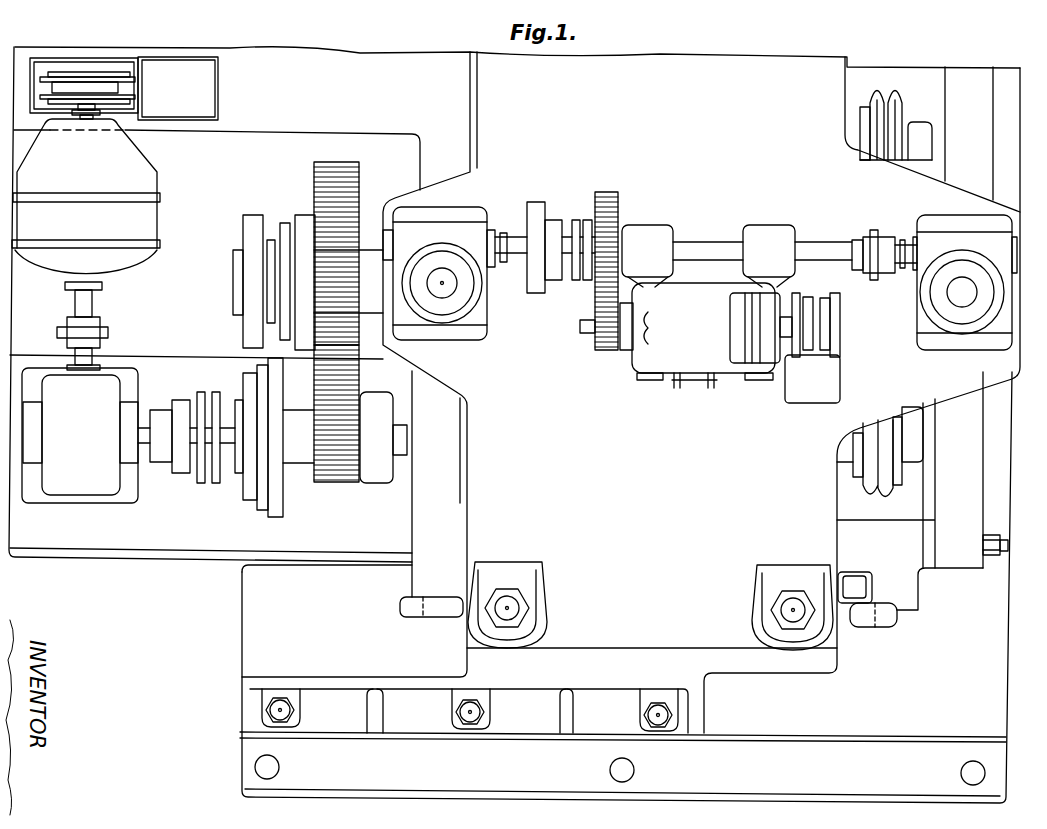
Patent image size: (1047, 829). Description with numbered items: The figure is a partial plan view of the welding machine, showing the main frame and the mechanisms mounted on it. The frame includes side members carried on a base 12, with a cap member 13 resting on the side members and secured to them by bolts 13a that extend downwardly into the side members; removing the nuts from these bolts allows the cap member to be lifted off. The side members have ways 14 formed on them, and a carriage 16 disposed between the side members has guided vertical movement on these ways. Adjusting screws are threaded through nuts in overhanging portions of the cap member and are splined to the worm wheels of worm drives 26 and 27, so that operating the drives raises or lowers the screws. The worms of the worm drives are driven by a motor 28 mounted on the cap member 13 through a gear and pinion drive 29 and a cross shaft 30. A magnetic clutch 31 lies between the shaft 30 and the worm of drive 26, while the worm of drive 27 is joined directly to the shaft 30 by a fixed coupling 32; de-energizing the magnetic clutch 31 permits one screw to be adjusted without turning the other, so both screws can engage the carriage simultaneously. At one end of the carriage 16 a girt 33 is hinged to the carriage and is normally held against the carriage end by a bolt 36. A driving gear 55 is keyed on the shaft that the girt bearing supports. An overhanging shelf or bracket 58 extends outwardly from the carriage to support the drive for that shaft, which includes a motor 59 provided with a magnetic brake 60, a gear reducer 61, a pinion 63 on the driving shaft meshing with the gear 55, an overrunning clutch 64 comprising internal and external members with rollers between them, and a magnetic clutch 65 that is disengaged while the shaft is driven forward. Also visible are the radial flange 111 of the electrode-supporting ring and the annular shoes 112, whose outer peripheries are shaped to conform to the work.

The base 12 is at (240, 708).
The cap member 13 is at (724, 64).
The bolts 13a is at (520, 607).
The way 14 is at (853, 616).
The carriage 16 is at (910, 585).
The worm drive 26 is at (460, 228).
The worm drive 27 is at (930, 320).
The motor 28 is at (708, 360).
The gear and pinion drive 29 is at (596, 297).
The cross shaft 30 is at (702, 252).
The magnetic clutch 31 is at (550, 215).
The fixed coupling 32 is at (860, 238).
The girt 33 is at (985, 446).
The bolt 36 is at (1000, 558).
The driving gear 55 is at (337, 170).
The shelf or bracket 58 is at (122, 546).
The motor 59 is at (140, 217).
The magnetic brake 60 is at (80, 80).
The gear reducer 61 is at (82, 487).
The pinion 63 is at (335, 481).
The overrunning clutch 64 is at (394, 404).
The magnetic clutch 65 is at (262, 512).
The radial flange 111 is at (911, 120).
The annular shoes 112 is at (888, 484).